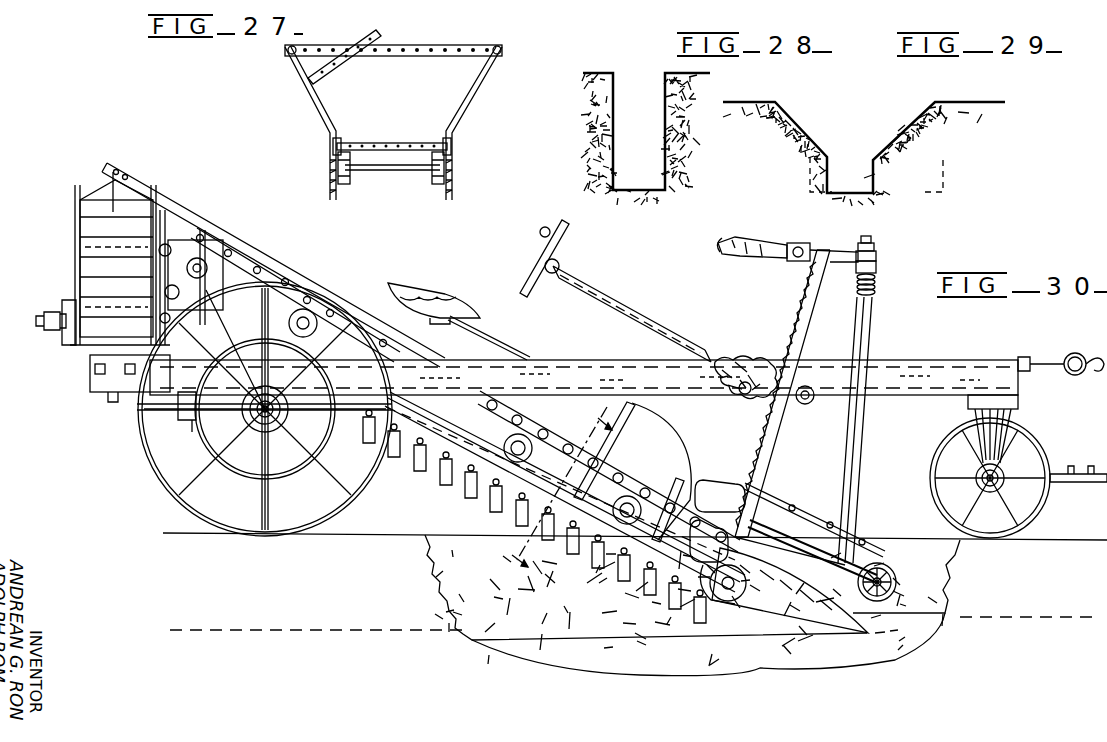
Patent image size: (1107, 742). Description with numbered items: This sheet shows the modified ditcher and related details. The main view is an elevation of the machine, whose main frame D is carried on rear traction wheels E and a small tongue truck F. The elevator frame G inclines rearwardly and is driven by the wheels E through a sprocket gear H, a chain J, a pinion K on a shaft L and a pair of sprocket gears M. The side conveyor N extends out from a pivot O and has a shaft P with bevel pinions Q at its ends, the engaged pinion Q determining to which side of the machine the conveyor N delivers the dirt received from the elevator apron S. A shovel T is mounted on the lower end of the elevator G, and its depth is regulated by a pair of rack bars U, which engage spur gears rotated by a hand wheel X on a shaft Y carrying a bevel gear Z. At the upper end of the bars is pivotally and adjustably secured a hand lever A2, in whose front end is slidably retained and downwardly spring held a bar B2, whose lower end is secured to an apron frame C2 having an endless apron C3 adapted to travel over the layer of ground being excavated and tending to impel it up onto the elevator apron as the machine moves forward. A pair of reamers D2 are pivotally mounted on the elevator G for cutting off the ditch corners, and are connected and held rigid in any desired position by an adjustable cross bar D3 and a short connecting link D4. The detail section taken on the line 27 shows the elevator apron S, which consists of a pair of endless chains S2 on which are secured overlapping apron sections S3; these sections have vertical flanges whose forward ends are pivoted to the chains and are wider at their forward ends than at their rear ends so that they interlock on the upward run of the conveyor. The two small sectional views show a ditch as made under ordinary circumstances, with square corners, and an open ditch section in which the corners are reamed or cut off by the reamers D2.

In FIG. 27, the adjustable cross bar D3 is at (417, 46).
In FIG. 27, the short connecting link D4 is at (343, 52).
In FIG. 27, the reamer D2 is at (313, 77).
In FIG. 30, the reamer D2 is at (653, 430).
In FIG. 27, the elevator apron S is at (393, 143).
In FIG. 30, the elevator apron S is at (532, 420).
In FIG. 27, the endless chain S2 is at (353, 143).
In FIG. 27, the elevator frame G is at (447, 195).
In FIG. 30, the elevator frame G is at (452, 423).
In FIG. 30, the side conveyor N is at (85, 268).
In FIG. 30, the bevel pinion Q is at (44, 325).
In FIG. 30, the shaft P is at (66, 345).
In FIG. 30, the pivot O is at (114, 402).
In FIG. 30, the shaft L is at (220, 277).
In FIG. 30, the pinion K is at (257, 277).
In FIG. 30, the chain J is at (241, 473).
In FIG. 30, the sprocket gear H is at (297, 470).
In FIG. 30, the sprocket gear M is at (186, 404).
In FIG. 30, the main frame D is at (888, 383).
In FIG. 30, the hand wheel X is at (567, 223).
In FIG. 30, the apron section S3 is at (497, 497).
In FIG. 30, the section line 27 is at (557, 492).
In FIG. 30, the shaft Y is at (742, 358).
In FIG. 30, the bevel gear Z is at (740, 396).
In FIG. 30, the rack bar U is at (777, 453).
In FIG. 30, the hand lever A2 is at (842, 258).
In FIG. 30, the bar B2 is at (860, 472).
In FIG. 30, the endless apron C3 is at (837, 527).
In FIG. 30, the apron frame C2 is at (780, 530).
In FIG. 30, the shovel T is at (780, 597).
In FIG. 30, the tongue truck F is at (1040, 435).
In FIG. 30, the traction wheel E is at (290, 537).